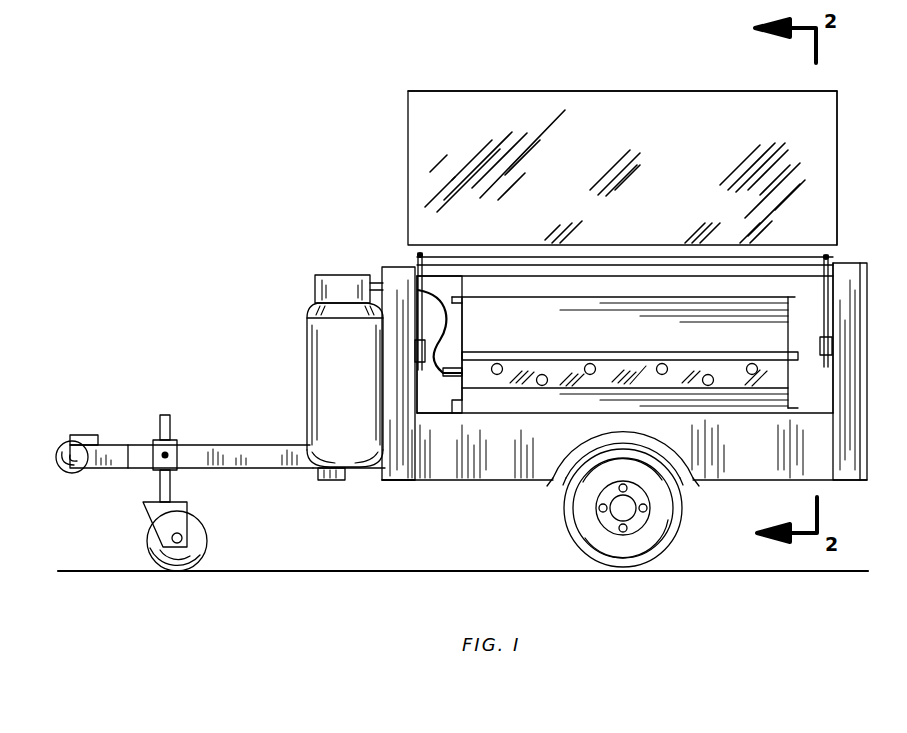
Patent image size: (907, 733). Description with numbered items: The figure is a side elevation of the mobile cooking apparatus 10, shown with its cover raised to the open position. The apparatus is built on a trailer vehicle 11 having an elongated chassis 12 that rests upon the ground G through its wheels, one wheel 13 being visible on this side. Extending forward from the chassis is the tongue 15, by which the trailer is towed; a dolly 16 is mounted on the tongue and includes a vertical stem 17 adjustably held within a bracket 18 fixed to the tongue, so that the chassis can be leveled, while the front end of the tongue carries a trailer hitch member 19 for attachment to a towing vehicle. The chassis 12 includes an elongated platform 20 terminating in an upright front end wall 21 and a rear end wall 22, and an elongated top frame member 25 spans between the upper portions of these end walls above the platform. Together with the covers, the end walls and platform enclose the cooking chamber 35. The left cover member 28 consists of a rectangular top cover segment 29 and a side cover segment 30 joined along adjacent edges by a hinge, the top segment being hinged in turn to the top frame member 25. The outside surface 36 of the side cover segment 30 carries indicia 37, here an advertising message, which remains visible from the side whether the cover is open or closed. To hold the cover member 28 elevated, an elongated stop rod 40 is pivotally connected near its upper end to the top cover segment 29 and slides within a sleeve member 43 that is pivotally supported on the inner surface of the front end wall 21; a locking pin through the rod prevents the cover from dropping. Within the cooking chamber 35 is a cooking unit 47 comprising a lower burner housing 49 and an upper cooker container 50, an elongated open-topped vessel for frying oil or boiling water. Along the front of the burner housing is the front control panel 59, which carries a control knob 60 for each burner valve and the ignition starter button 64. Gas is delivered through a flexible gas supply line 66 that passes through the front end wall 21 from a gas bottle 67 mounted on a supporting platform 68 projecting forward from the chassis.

The mobile cooking apparatus 10 is at (404, 200).
The trailer vehicle 11 is at (404, 482).
The chassis 12 is at (846, 463).
The wheel 13 is at (671, 513).
The tongue 15 is at (220, 445).
The dolly 16 is at (174, 508).
The vertical stem 17 is at (166, 431).
The bracket 18 is at (157, 463).
The trailer hitch member 19 is at (83, 439).
The platform 20 is at (625, 397).
The front end wall 21 is at (387, 359).
The rear end wall 22 is at (861, 357).
The top frame member 25 is at (646, 223).
The left cover member 28 is at (622, 153).
The top cover segment 29 is at (480, 263).
The side cover segment 30 is at (832, 154).
The outside surface 36 is at (752, 121).
The indicia 37 is at (625, 145).
The cooking chamber 35 is at (842, 306).
The stop rod 40 is at (419, 253).
The sleeve member 43 is at (832, 340).
The cooking unit 47 is at (625, 315).
The burner housing 49 is at (477, 378).
The cooker container 50 is at (519, 332).
The front control panel 59 is at (696, 357).
The control knob 60 is at (625, 352).
The ignition starter button 64 is at (507, 392).
The gas supply line 66 is at (447, 299).
The gas bottle 67 is at (353, 365).
The supporting platform 68 is at (346, 486).
The ground G is at (506, 570).